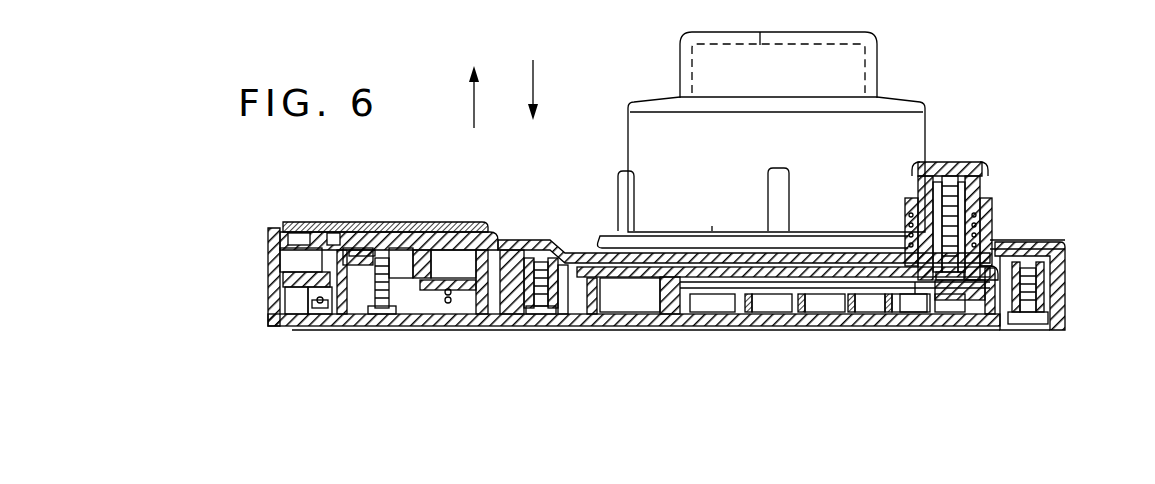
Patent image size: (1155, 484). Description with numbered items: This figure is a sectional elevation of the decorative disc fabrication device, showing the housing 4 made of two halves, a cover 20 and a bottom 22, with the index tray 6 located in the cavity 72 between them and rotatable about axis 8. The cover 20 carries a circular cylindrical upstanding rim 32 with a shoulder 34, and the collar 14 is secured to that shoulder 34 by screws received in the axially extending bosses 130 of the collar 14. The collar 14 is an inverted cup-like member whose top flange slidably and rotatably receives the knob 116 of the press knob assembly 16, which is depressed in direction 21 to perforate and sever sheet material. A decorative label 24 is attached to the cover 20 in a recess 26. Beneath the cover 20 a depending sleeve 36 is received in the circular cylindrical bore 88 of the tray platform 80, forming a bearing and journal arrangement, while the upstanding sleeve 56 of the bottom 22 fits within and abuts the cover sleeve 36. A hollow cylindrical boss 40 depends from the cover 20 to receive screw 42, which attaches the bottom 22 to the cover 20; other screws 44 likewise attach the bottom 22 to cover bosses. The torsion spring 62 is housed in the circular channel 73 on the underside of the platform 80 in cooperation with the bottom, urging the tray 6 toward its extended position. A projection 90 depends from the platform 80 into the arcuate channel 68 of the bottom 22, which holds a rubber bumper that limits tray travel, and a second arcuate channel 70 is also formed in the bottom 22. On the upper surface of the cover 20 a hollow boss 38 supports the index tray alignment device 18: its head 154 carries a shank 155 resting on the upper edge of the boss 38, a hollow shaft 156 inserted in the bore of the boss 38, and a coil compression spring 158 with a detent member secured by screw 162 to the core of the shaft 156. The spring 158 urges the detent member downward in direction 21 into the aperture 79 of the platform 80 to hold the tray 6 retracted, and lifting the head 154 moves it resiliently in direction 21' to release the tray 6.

The housing 4 is at (1078, 278).
The index tray 6 is at (268, 289).
The axis 8 is at (382, 362).
The collar 14 is at (926, 126).
The press knob assembly 16 is at (877, 72).
The index tray alignment device 18 is at (1000, 160).
The cover 20 is at (268, 236).
The direction 21 is at (556, 90).
The direction 21' is at (453, 97).
The bottom 22 is at (268, 327).
The decorative label 24 is at (387, 222).
The recess 26 is at (470, 222).
The upstanding rim 32 is at (603, 240).
The shoulder 34 is at (736, 197).
The depending sleeve 36 is at (332, 222).
The hollow circular cylindrical boss 38 is at (993, 216).
The hollow cylindrical boss 40 is at (358, 222).
The screw 42 is at (396, 318).
The screws 44 is at (535, 318).
The upstanding circular cylindrical sleeve 56 is at (432, 316).
The torsion spring 62 is at (314, 320).
The arcuate channel 68 is at (660, 326).
The second arcuate channel 70 is at (702, 326).
The cavity 72 is at (898, 320).
The circular channel 73 is at (336, 326).
The aperture 79 is at (972, 310).
The platform 80 is at (782, 322).
The circular cylindrical bore 88 is at (436, 222).
The projection 90 is at (610, 326).
The knob 116 is at (680, 62).
The axially extending bosses 130 is at (772, 181).
The head 154 is at (965, 170).
The shank 155 is at (982, 202).
The hollow shaft 156 is at (906, 212).
The coil compression spring 158 is at (976, 272).
The screw 162 is at (950, 314).